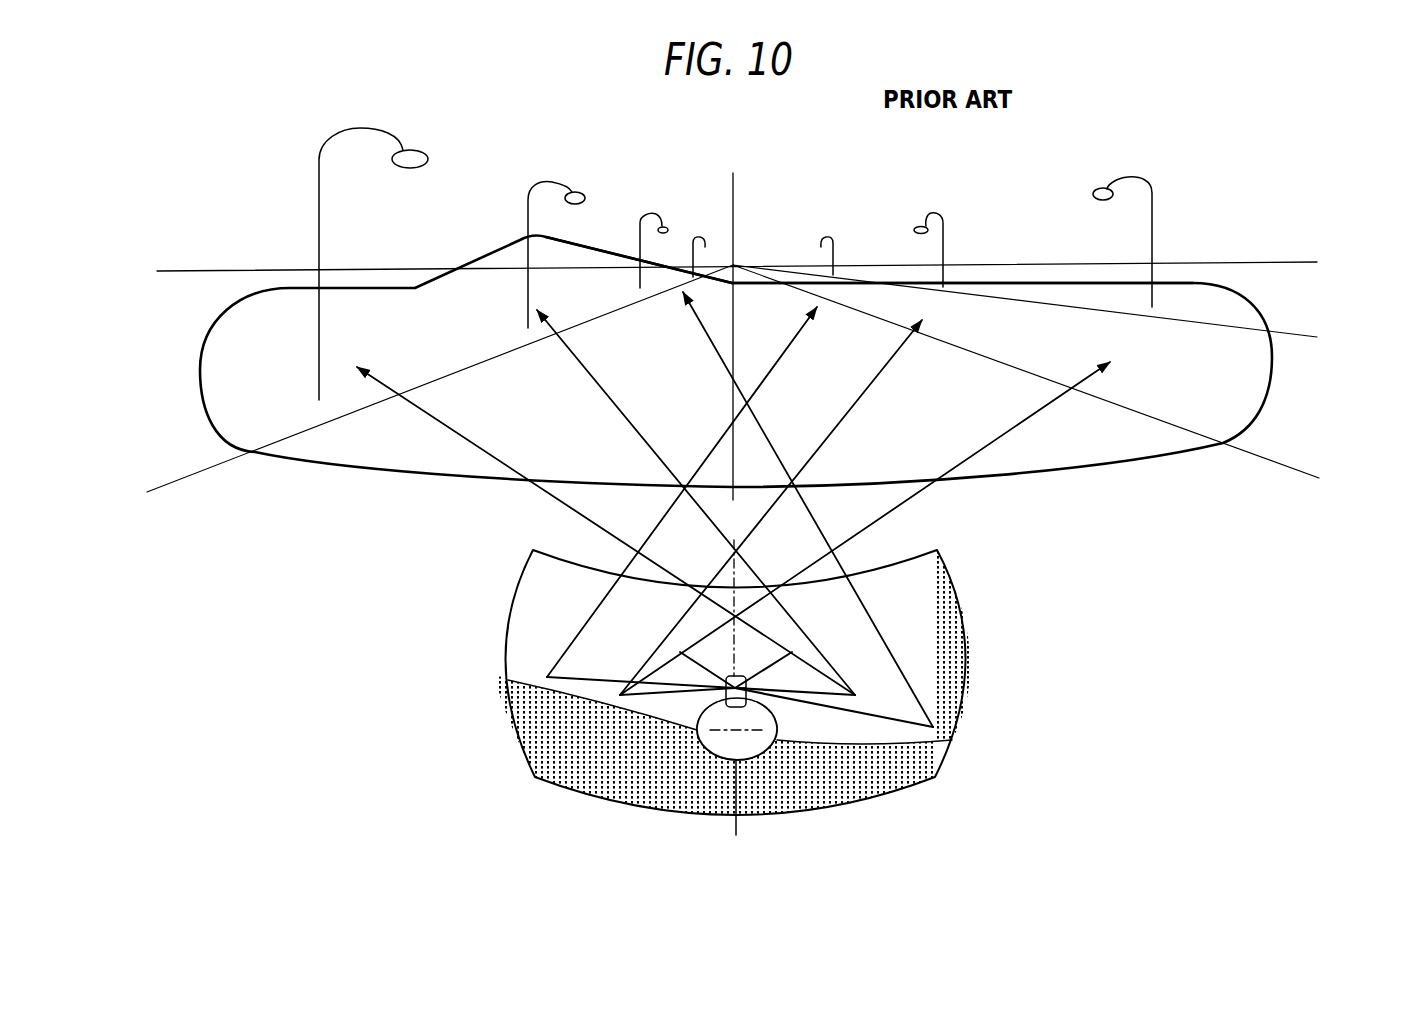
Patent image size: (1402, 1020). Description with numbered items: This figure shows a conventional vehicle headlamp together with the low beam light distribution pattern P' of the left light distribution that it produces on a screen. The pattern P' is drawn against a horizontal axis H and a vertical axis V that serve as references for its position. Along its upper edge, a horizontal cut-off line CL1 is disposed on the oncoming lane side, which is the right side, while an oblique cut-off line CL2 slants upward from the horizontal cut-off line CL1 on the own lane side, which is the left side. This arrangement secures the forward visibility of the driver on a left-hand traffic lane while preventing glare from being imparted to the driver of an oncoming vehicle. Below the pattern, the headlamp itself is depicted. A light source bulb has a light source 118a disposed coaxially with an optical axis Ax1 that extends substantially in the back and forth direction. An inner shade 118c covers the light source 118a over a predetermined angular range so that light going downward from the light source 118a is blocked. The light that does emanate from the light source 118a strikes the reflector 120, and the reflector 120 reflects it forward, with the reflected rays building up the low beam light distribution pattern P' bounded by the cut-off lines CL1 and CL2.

The reflector 120 is at (964, 600).
The light source 118a is at (762, 650).
The inner shade 118c is at (712, 650).
The optical axis Ax1 is at (733, 770).
The horizontal cut-off line CL1 is at (860, 283).
The oblique cut-off line CL2 is at (612, 252).
The low beam light distribution pattern P' is at (736, 344).
The horizontal axis H is at (737, 269).
The vertical axis V is at (734, 409).